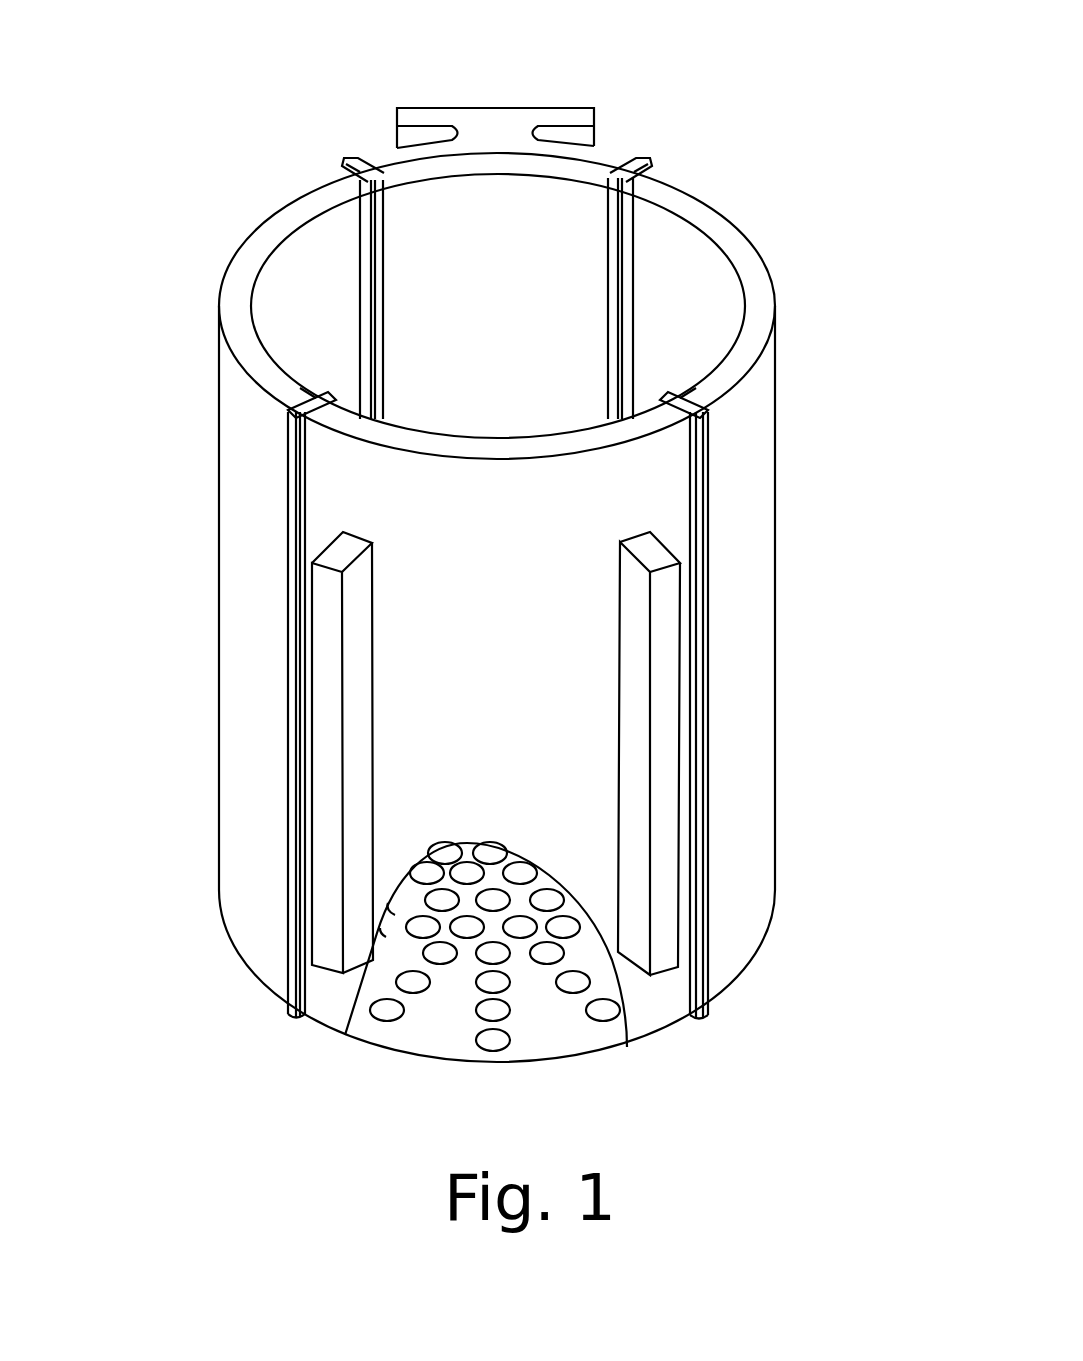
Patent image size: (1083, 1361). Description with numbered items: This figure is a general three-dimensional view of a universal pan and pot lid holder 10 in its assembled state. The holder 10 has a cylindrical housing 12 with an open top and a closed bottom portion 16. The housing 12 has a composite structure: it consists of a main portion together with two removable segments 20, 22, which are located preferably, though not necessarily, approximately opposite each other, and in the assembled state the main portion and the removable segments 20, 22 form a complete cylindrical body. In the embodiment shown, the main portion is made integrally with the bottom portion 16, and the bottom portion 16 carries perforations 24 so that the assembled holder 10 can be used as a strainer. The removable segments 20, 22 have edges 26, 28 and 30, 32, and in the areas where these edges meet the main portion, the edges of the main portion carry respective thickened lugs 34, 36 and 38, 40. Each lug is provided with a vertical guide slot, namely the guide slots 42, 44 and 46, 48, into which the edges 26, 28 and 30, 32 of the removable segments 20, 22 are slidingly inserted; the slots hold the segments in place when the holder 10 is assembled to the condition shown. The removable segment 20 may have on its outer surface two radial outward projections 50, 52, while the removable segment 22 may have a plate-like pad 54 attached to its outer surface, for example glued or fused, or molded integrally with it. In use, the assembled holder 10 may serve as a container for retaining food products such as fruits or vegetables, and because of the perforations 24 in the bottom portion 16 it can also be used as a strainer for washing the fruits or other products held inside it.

The universal pan and pot lid holder 10 is at (255, 157).
The cylindrical housing 12 is at (218, 750).
The bottom portion 16 is at (490, 971).
The removable segment 20 is at (512, 777).
The removable segment 22 is at (507, 103).
The perforation 24 is at (495, 1038).
The edge 26 is at (298, 418).
The edge 28 is at (695, 418).
The edge 30 is at (380, 165).
The edge 32 is at (611, 162).
The thickened lug 34 is at (296, 404).
The thickened lug 36 is at (702, 405).
The thickened lug 38 is at (352, 162).
The thickened lug 40 is at (647, 170).
The vertical guide slot 42 is at (310, 393).
The vertical guide slot 44 is at (685, 398).
The vertical guide slot 46 is at (355, 160).
The vertical guide slot 48 is at (633, 150).
The radial outward projection 50 is at (330, 645).
The radial outward projection 52 is at (662, 637).
The plate-like pad 54 is at (478, 107).